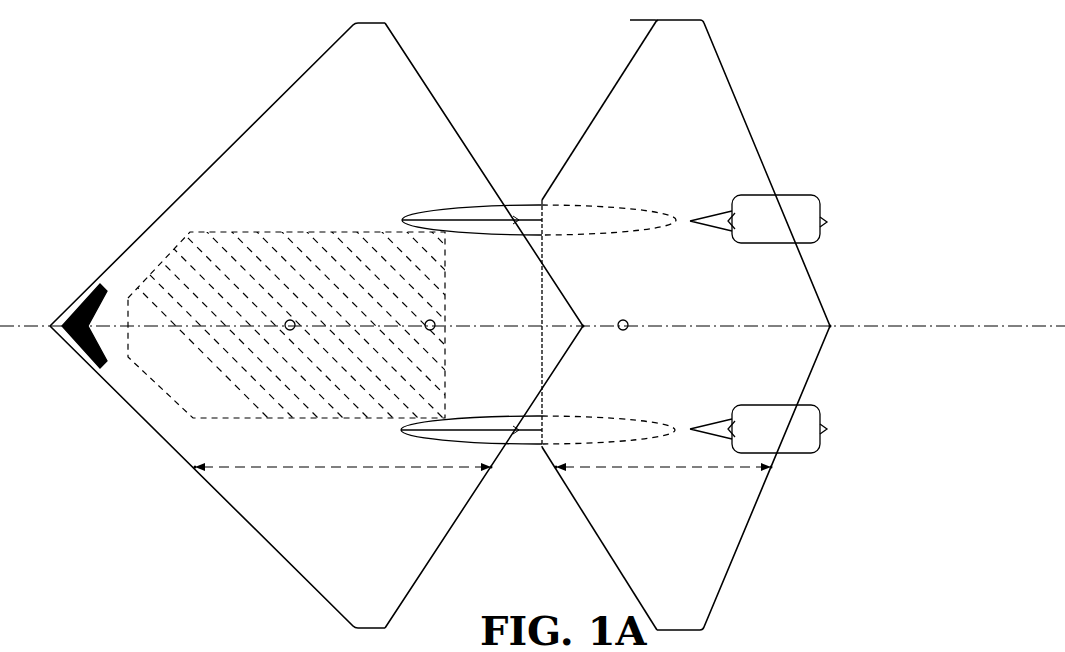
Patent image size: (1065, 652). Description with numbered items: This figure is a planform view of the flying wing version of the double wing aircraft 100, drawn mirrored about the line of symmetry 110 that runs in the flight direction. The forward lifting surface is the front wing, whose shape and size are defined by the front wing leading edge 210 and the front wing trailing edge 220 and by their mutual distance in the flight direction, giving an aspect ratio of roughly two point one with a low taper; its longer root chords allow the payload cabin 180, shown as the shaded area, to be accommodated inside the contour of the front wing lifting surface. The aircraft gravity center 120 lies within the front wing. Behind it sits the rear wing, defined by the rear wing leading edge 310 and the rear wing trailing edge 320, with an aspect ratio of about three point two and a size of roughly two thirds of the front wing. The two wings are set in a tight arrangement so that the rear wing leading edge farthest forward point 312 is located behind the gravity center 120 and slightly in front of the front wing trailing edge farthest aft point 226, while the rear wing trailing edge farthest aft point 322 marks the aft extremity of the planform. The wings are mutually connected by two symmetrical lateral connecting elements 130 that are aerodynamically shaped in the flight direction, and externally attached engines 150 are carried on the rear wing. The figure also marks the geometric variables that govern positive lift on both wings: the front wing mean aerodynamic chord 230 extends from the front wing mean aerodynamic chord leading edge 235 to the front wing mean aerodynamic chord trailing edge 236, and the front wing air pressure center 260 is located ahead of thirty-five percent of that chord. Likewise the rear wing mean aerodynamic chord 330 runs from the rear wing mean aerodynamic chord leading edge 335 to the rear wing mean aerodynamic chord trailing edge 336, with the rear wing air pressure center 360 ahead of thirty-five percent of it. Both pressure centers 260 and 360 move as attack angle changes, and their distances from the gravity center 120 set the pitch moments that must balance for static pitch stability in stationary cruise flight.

The double wing aircraft 100 is at (439, 324).
The line of symmetry 110 is at (82, 355).
The aircraft gravity center 120 is at (434, 321).
The lateral connecting elements 130 is at (480, 212).
The externally attached engines 150 is at (775, 434).
The payload cabin 180 is at (205, 353).
The front wing leading edge 210 is at (165, 210).
The front wing trailing edge 220 is at (444, 108).
The front wing trailing edge farthest aft point 226 is at (584, 330).
The front wing mean aerodynamic chord 230 is at (358, 470).
The front wing mean aerodynamic chord leading edge 235 is at (196, 472).
The front wing mean aerodynamic chord trailing edge 236 is at (490, 472).
The front wing air pressure center 260 is at (294, 321).
The rear wing leading edge 310 is at (612, 92).
The rear wing leading edge farthest forward point 312 is at (543, 204).
The rear wing trailing edge 320 is at (722, 62).
The rear wing trailing edge farthest aft point 322 is at (834, 323).
The rear wing mean aerodynamic chord 330 is at (662, 470).
The rear wing mean aerodynamic chord leading edge 335 is at (558, 472).
The rear wing mean aerodynamic chord trailing edge 336 is at (772, 470).
The rear wing air pressure center 360 is at (627, 321).